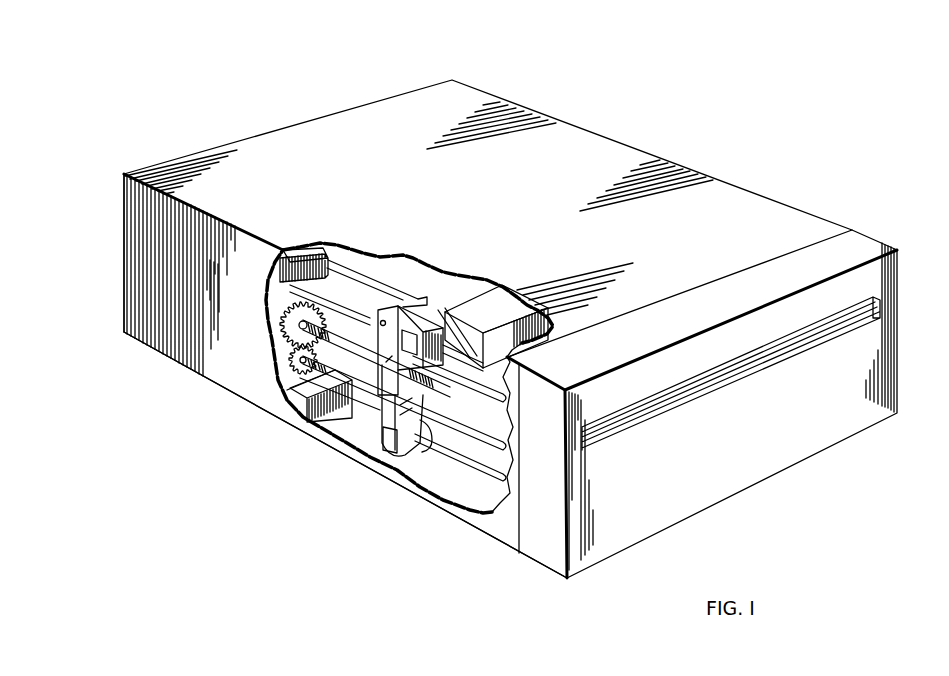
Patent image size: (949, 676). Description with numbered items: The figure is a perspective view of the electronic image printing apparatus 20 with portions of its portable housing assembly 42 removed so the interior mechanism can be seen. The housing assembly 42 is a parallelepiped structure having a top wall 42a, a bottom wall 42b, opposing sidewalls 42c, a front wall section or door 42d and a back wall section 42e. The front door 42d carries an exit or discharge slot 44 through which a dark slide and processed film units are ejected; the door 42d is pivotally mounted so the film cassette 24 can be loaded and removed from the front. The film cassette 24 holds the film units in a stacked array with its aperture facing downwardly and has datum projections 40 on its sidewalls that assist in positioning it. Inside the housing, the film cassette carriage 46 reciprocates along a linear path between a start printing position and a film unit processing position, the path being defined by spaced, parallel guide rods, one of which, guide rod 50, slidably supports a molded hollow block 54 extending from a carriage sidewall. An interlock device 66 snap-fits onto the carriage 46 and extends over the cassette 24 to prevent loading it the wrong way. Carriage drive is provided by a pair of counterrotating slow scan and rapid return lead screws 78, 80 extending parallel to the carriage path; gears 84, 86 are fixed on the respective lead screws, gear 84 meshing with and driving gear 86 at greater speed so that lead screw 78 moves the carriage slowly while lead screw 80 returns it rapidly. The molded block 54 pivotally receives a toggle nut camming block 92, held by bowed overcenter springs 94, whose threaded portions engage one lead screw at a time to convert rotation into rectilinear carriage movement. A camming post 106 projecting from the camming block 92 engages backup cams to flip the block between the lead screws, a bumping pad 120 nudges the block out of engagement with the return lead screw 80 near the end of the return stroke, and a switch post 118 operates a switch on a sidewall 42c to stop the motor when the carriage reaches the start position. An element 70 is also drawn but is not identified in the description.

The electronic image printing apparatus 20 is at (740, 158).
The film cassette 24 is at (405, 262).
The datum projections 40 is at (476, 350).
The portable housing assembly 42 is at (290, 116).
The top wall 42a is at (620, 165).
The bottom wall 42b is at (215, 380).
The sidewalls 42c is at (775, 223).
The front wall section or door 42d is at (750, 478).
The back wall section 42e is at (122, 272).
The exit or discharge slot 44 is at (890, 313).
The film cassette carriage 46 is at (357, 262).
The guide rod 50 is at (360, 318).
The molded hollow block 54 is at (398, 308).
The interlock device 66 is at (477, 295).
The support arm 70 is at (453, 330).
The slow scan lead screw 78 is at (510, 446).
The rapid return lead screw 80 is at (510, 479).
The gear 84 is at (280, 300).
The gear 86 is at (290, 362).
The toggle nut camming block 92 is at (385, 455).
The bowed overcenter springs 94 is at (428, 445).
The camming post 106 is at (385, 408).
The switch post 118 is at (378, 338).
The bumping pad 120 is at (325, 425).